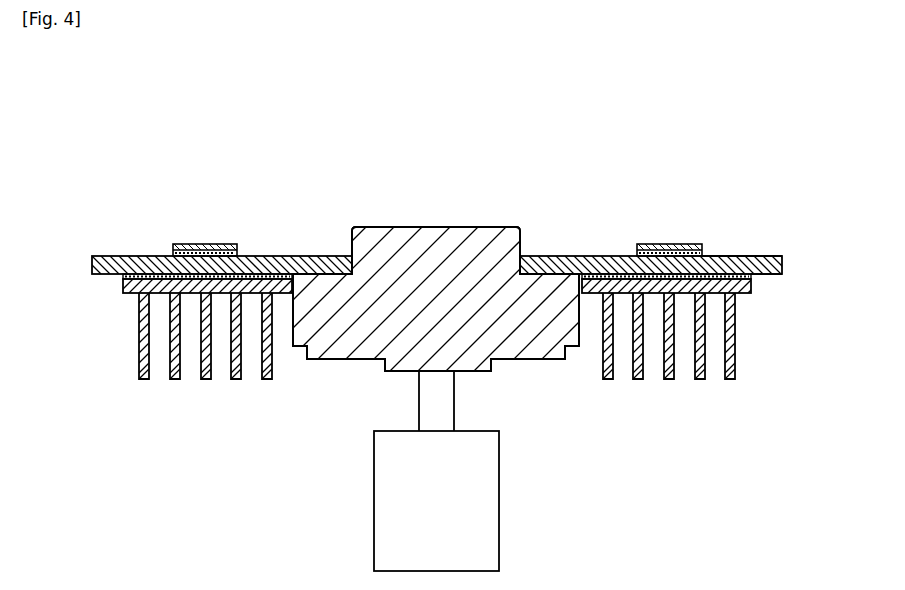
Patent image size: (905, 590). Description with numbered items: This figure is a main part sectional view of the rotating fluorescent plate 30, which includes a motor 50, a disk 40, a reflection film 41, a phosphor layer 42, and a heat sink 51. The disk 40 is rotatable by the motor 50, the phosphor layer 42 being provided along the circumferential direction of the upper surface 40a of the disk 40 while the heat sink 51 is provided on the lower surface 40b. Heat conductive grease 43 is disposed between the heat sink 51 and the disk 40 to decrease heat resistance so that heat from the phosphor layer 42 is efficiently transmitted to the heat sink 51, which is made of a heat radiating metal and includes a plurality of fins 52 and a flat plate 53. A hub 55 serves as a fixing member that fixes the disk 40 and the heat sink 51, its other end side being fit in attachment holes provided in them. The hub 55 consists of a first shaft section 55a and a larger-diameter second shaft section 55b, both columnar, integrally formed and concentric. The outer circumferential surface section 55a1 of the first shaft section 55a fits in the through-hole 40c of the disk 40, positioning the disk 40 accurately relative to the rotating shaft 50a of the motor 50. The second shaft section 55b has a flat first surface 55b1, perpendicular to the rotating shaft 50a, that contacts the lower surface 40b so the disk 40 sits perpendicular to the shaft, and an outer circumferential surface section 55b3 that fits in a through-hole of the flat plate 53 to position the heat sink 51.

The rotating fluorescent plate 30 is at (683, 97).
The disk 40 is at (782, 263).
The upper surface 40a is at (770, 274).
The lower surface 40b is at (745, 256).
The through-hole 40c is at (357, 264).
The reflection film 41 is at (172, 256).
The phosphor layer 42 is at (172, 252).
The heat conductive grease 43 is at (123, 277).
The motor 50 is at (507, 525).
The rotating shaft 50a is at (430, 417).
The heat sink 51 is at (396, 395).
The fins 52 is at (288, 448).
The flat plate 53 is at (243, 286).
The hub 55 is at (462, 271).
The first shaft section 55a is at (474, 242).
The outer circumferential surface section 55a1 is at (350, 254).
The second shaft section 55b is at (547, 296).
The first surface 55b1 is at (552, 300).
The outer circumferential surface section 55b3 is at (579, 327).